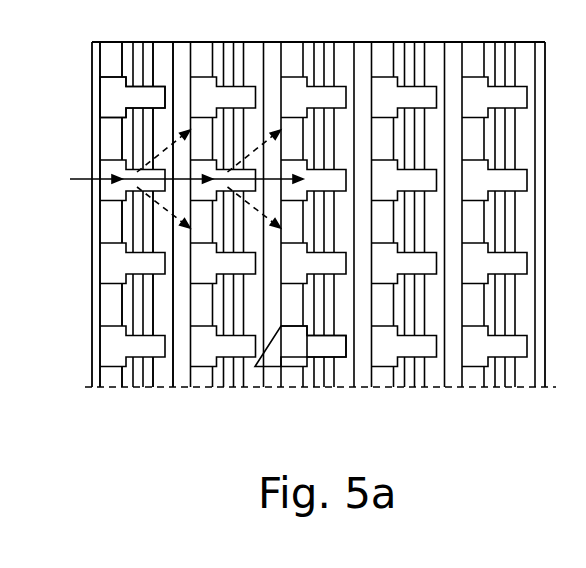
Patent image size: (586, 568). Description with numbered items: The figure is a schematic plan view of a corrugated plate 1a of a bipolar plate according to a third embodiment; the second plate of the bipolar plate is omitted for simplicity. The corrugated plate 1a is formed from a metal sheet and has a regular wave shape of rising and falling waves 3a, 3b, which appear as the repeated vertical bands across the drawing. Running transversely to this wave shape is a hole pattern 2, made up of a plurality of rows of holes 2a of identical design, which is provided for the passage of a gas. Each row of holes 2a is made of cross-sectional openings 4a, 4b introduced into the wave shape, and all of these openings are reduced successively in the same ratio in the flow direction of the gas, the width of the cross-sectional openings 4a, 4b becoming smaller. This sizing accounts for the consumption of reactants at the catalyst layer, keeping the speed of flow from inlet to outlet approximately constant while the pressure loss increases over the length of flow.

The corrugated plate 1a is at (70, 273).
The row of holes 2a is at (84, 67).
The hole pattern 2 is at (112, 95).
The rising wave 3a is at (112, 387).
The falling wave 3b is at (162, 387).
The cross-sectional opening 4a is at (295, 343).
The cross-sectional opening 4b is at (330, 343).